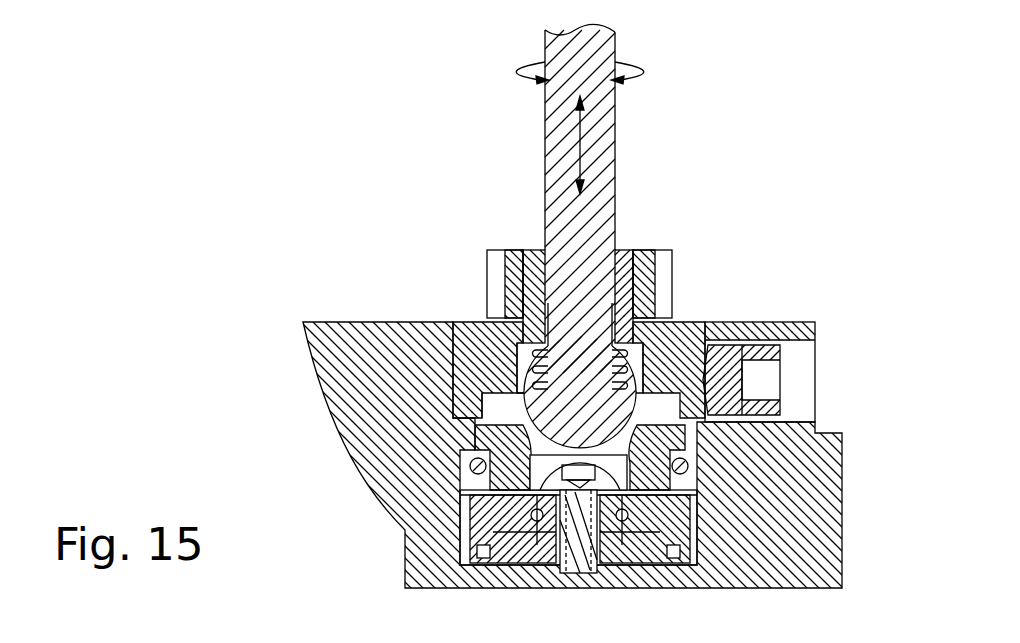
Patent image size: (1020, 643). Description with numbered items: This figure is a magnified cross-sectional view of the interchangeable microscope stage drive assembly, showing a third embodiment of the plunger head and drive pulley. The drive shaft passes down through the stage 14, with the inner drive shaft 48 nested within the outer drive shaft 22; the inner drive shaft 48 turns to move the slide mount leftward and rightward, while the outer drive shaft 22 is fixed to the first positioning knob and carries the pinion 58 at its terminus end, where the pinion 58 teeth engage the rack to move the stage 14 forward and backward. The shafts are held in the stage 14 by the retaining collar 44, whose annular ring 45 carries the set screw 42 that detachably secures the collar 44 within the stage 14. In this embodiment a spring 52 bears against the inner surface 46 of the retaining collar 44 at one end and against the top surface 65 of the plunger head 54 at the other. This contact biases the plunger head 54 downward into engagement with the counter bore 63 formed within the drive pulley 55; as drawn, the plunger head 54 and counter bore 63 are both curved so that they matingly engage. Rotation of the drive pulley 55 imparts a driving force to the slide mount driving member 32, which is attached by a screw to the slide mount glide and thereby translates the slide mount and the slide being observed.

The stage 14 is at (335, 390).
The outer drive shaft 22 is at (645, 258).
The slide mount driving member 32 is at (475, 474).
The set screw 42 is at (772, 390).
The retaining collar 44 is at (478, 342).
The annular ring 45 is at (470, 383).
The inner surface 46 is at (527, 345).
The inner drive shaft 48 is at (600, 280).
The spring 52 is at (625, 345).
The plunger head 54 is at (603, 405).
The drive pulley 55 is at (493, 442).
The pinion 58 is at (497, 262).
The counter bore 63 is at (705, 428).
The top surface 65 is at (750, 322).